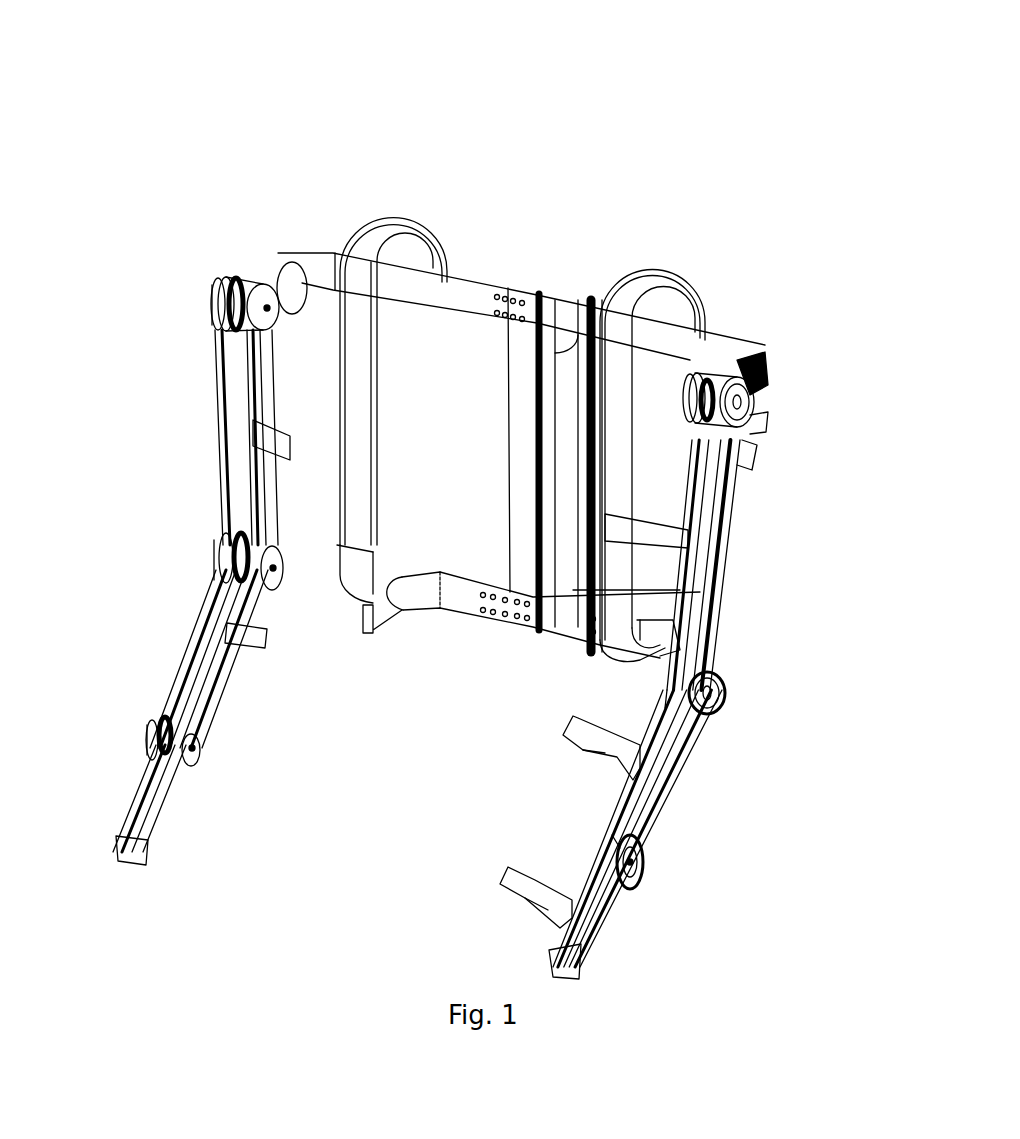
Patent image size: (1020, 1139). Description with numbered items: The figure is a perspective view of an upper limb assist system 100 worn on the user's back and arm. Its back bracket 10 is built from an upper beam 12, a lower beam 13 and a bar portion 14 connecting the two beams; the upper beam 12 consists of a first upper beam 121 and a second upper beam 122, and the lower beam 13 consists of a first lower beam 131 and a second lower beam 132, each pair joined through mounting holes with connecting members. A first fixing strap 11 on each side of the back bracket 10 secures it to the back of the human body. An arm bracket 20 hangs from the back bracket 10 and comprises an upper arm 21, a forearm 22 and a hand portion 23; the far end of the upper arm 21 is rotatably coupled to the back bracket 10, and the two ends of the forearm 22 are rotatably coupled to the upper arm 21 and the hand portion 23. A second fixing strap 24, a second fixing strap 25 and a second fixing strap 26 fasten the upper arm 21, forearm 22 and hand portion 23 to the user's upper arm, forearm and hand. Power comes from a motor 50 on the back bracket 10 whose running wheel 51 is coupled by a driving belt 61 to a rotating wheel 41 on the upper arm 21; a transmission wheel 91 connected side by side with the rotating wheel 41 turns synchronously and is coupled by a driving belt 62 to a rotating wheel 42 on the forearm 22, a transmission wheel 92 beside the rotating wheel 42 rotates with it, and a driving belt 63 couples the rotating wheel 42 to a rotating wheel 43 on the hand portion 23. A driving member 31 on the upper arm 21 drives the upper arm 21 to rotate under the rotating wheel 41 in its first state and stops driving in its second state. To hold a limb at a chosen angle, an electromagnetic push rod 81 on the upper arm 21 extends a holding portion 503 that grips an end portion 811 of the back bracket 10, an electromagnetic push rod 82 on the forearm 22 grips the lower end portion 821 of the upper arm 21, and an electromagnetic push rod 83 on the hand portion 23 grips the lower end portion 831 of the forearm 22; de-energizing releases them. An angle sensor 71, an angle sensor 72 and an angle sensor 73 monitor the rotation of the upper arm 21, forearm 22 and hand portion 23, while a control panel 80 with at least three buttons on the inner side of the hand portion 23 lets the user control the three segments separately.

The upper limb assist system 100 is at (493, 90).
The back bracket 10 is at (666, 174).
The first fixing strap 11 is at (388, 232).
The upper beam 12 is at (500, 284).
The lower beam 13 is at (513, 284).
The bar portion 14 is at (593, 294).
The first upper beam 121 is at (341, 247).
The second upper beam 122 is at (708, 338).
The first lower beam 131 is at (445, 609).
The second lower beam 132 is at (583, 643).
The driving belt 62 is at (483, 611).
The arm bracket 20 is at (748, 628).
The upper arm 21 is at (713, 554).
The forearm 22 is at (688, 718).
The hand portion 23 is at (640, 868).
The second fixing strap 24 is at (692, 524).
The second fixing strap 25 is at (683, 775).
The second fixing strap 26 is at (600, 913).
The motor 50 is at (747, 335).
The running wheel 51 is at (767, 358).
The driving belt 61 is at (763, 398).
The transmission wheel 91 is at (760, 410).
The driving member 31 is at (757, 428).
The angle sensor 71 is at (743, 458).
The angle sensor 72 is at (563, 720).
The angle sensor 73 is at (588, 873).
The driving belt 63 is at (627, 777).
The transmission wheel 92 is at (668, 705).
The rotating wheel 42 is at (223, 517).
The rotating wheel 43 is at (167, 723).
The holding portion 503 is at (232, 305).
The control panel 80 is at (127, 822).
The electromagnetic push rod 81 is at (220, 338).
The electromagnetic push rod 82 is at (223, 581).
The electromagnetic push rod 83 is at (157, 757).
The rotating wheel 41 is at (237, 283).
The end portion 811 is at (260, 283).
The lower end portion 821 is at (275, 588).
The lower end portion 831 is at (197, 767).